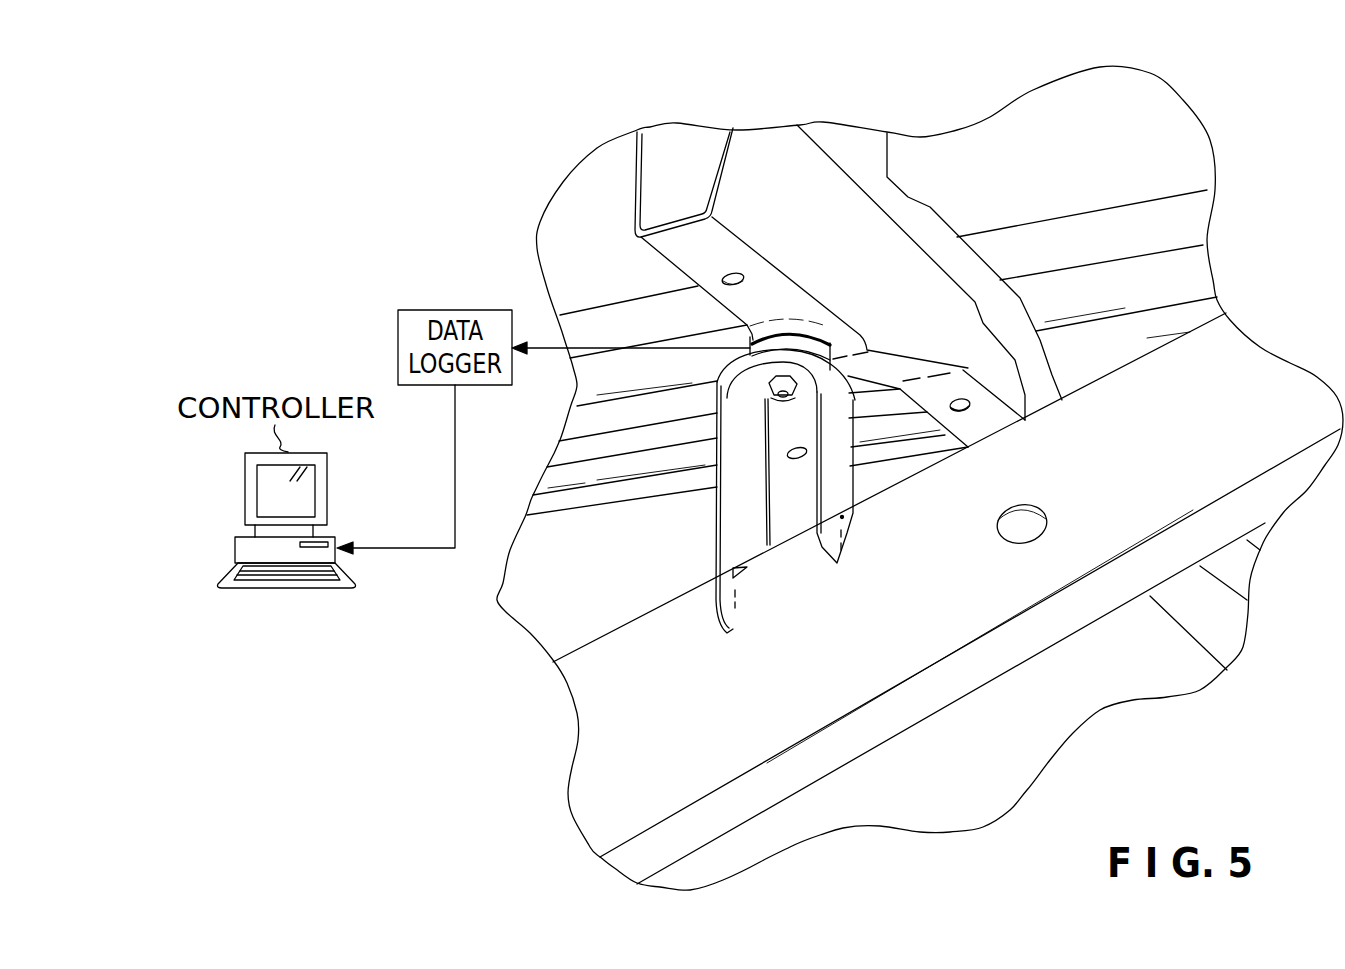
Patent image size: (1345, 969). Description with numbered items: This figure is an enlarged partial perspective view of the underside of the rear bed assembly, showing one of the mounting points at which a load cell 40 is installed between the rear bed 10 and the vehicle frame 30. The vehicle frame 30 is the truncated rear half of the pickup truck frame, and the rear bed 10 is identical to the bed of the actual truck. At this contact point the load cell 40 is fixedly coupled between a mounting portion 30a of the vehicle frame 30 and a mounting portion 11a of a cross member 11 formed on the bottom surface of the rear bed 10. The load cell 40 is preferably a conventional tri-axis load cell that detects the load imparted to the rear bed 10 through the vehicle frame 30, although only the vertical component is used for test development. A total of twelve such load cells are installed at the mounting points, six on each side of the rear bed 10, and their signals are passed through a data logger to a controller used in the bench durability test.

The rear bed 10 is at (1107, 173).
The cross member 11 is at (817, 205).
The mounting portion of the cross member 11a is at (793, 324).
The load cell 40 is at (811, 350).
The vehicle frame 30 is at (603, 682).
The mounting portion of the vehicle frame 30a is at (730, 518).